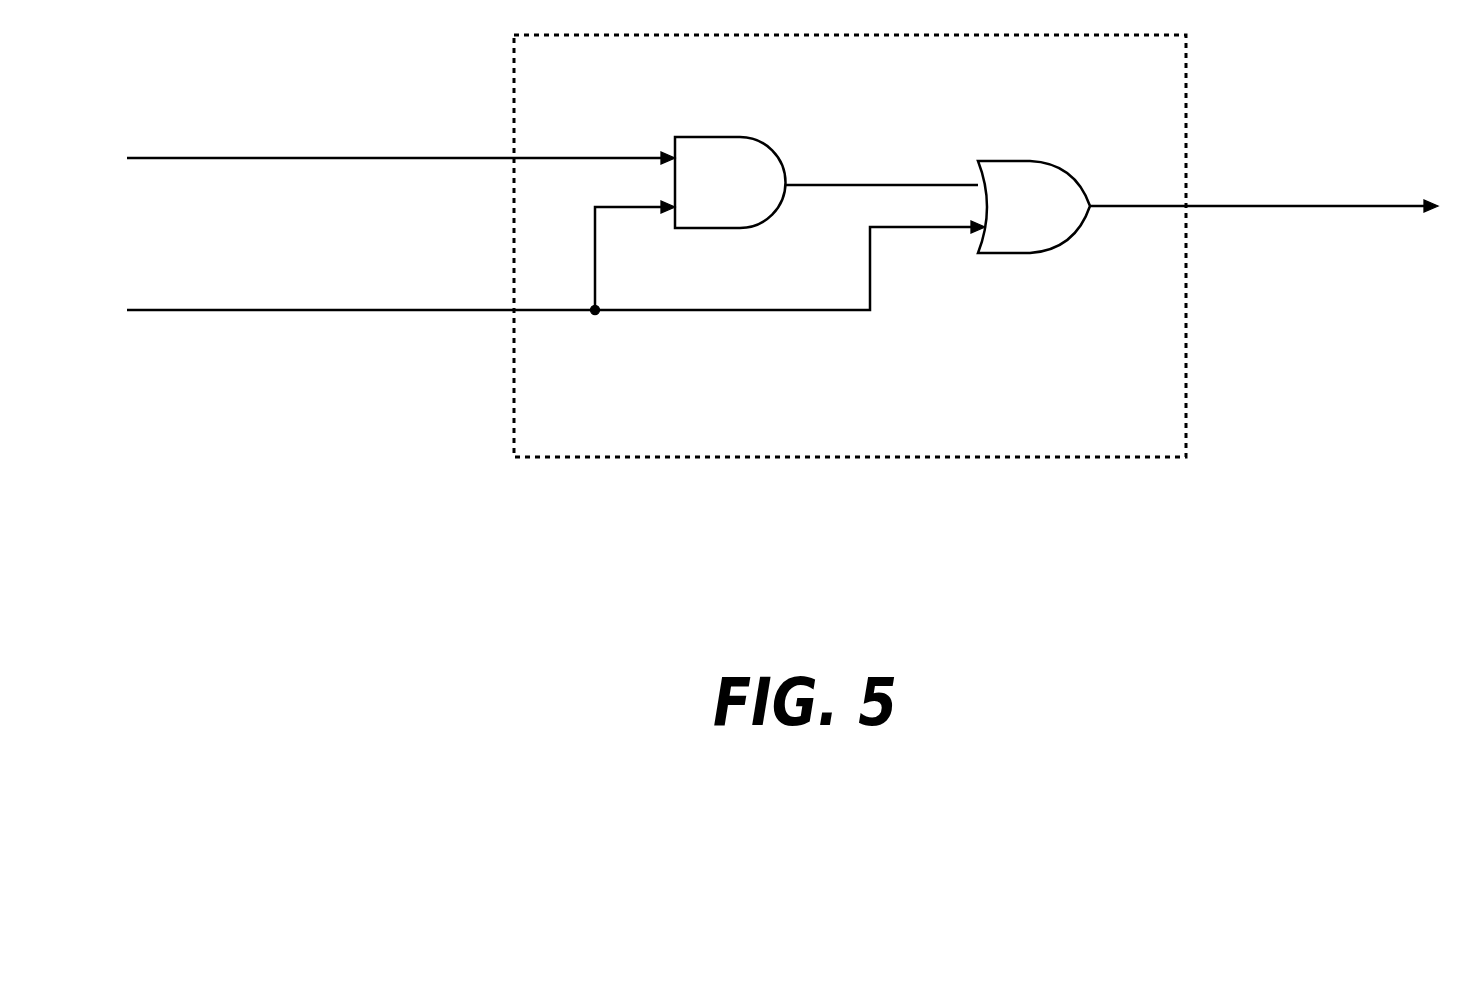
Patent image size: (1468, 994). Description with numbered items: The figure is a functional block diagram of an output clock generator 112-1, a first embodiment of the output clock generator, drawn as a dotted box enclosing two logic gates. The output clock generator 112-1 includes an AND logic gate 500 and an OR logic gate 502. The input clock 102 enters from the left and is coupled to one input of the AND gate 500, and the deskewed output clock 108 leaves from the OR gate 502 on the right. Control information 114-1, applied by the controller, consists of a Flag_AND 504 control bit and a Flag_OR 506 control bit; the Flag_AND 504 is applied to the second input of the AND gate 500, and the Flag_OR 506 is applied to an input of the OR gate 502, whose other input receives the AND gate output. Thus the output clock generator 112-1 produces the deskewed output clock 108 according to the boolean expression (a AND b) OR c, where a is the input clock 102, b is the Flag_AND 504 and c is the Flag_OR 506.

The input clock 102 is at (386, 158).
The control information 114-1 is at (386, 310).
The AND logic gate 500 is at (728, 136).
The OR logic gate 502 is at (1018, 161).
The Flag_AND control bit 504 is at (615, 210).
The Flag_OR control bit 506 is at (833, 312).
The deskewed output clock 108 is at (1338, 208).
The output clock generator 112-1 is at (580, 466).